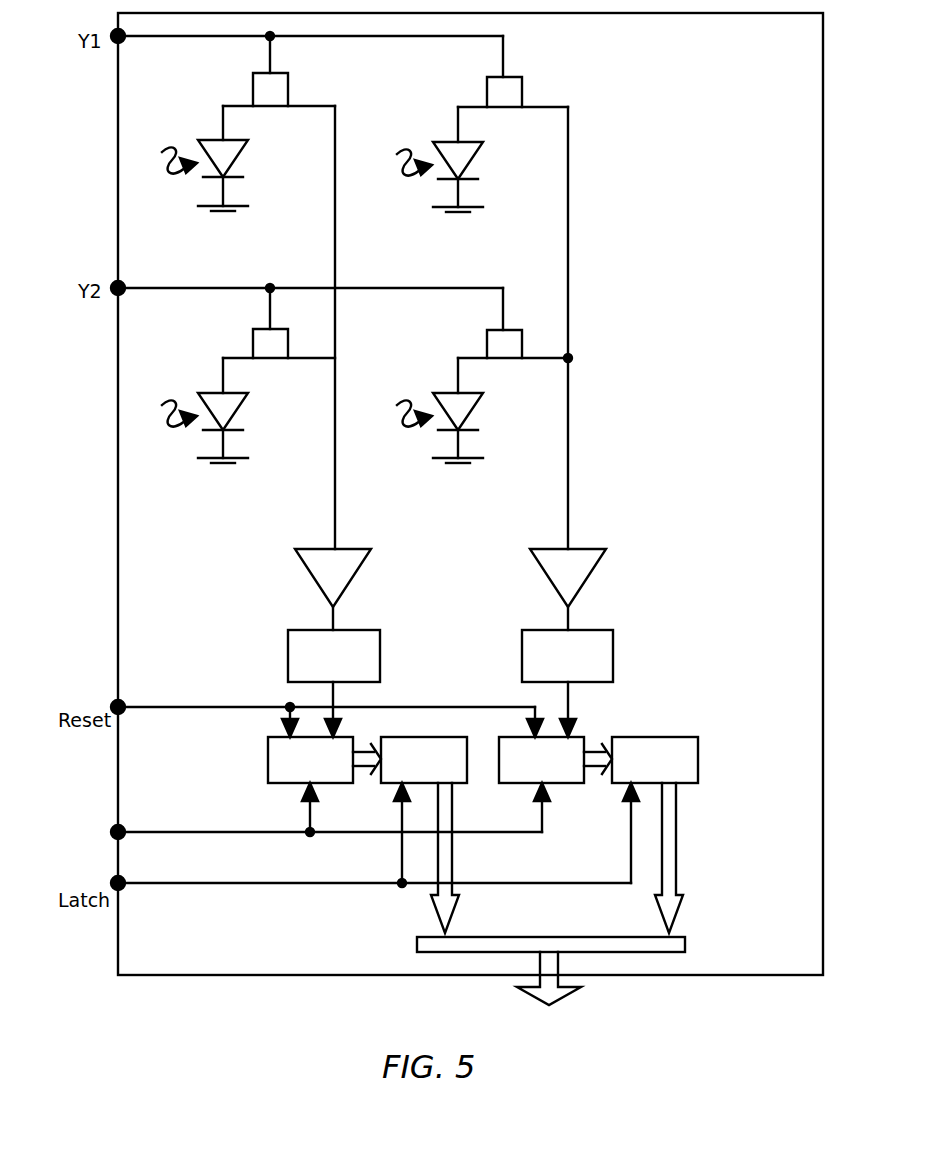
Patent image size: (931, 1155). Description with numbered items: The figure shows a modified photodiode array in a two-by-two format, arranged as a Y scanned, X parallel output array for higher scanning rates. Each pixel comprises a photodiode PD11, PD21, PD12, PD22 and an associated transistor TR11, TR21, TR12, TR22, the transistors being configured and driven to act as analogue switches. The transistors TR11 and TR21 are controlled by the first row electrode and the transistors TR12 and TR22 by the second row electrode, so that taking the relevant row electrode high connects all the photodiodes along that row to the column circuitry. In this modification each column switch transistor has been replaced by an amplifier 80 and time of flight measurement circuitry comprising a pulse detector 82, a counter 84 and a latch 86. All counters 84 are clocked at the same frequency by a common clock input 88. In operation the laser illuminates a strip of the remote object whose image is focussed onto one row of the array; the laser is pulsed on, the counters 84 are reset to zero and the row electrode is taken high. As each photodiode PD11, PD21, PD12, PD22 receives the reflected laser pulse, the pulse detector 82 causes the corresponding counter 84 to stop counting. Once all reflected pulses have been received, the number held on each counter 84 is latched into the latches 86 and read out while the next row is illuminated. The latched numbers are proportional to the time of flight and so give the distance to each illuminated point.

The transistor TR11 is at (258, 88).
The transistor TR21 is at (494, 89).
The transistor TR12 is at (259, 340).
The transistor TR22 is at (498, 340).
The photodiode PD11 is at (234, 175).
The photodiode PD21 is at (467, 177).
The photodiode PD12 is at (231, 428).
The photodiode PD22 is at (467, 428).
The amplifier 80 is at (548, 583).
The pulse detector 82 is at (522, 646).
The counter 84 is at (268, 750).
The latch 86 is at (698, 740).
The clock input 88 is at (125, 834).